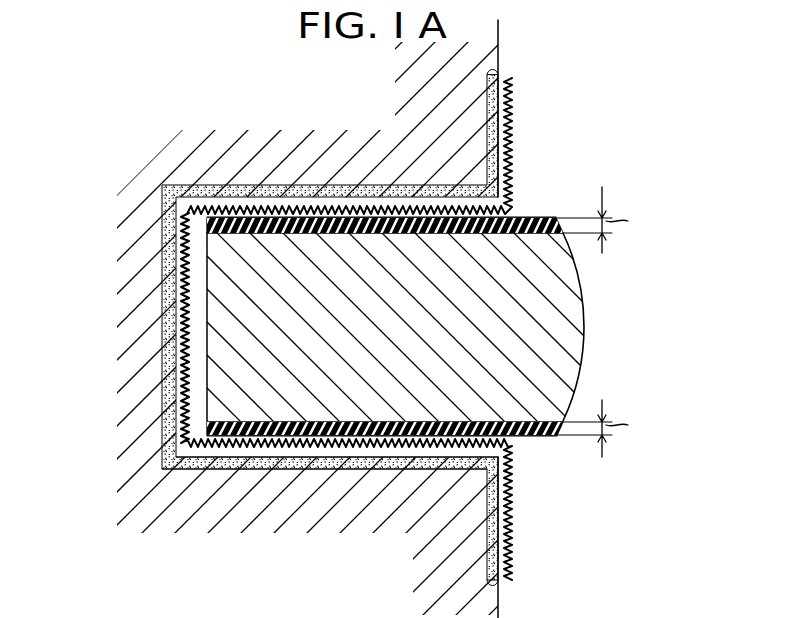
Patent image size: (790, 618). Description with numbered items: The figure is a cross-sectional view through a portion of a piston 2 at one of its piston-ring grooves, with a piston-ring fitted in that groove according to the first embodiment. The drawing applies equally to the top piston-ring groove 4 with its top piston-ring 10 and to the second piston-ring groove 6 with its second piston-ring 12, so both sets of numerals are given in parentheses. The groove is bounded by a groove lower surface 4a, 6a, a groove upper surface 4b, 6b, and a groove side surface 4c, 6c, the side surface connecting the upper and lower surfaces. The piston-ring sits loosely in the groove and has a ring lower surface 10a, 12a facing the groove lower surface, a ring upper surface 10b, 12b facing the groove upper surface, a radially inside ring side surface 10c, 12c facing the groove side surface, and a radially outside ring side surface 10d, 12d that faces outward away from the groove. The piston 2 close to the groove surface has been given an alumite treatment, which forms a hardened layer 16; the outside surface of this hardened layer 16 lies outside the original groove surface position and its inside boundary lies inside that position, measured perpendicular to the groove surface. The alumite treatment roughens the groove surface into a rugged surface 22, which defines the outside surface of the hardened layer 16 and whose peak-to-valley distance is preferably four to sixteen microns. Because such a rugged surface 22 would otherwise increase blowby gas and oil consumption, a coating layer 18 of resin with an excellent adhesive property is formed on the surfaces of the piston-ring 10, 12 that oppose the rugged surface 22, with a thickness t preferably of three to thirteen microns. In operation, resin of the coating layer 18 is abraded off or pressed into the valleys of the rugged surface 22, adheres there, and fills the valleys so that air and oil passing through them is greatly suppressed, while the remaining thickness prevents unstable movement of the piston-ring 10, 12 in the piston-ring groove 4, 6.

The piston 2 is at (480, 70).
The top piston-ring groove 4 is at (285, 332).
The second piston-ring groove 6 is at (285, 332).
The groove lower surface 4a is at (347, 501).
The groove lower surface 6a is at (345, 447).
The groove upper surface 4b is at (346, 150).
The groove upper surface 6b is at (326, 205).
The groove side surface 4c is at (168, 481).
The groove side surface 6c is at (185, 440).
The top piston-ring 10 is at (394, 326).
The second piston-ring 12 is at (394, 326).
The ring lower surface 10a is at (429, 487).
The ring lower surface 12a is at (529, 437).
The ring upper surface 10b is at (429, 166).
The ring upper surface 12b is at (516, 218).
The radially inside ring side surface 10c is at (137, 278).
The radially inside ring side surface 12c is at (207, 243).
The radially outside ring side surface 10d is at (630, 327).
The radially outside ring side surface 12d is at (583, 340).
The hardened layer 16 is at (206, 462).
The coating layer 18 is at (535, 218).
The rugged surface 22 is at (247, 447).